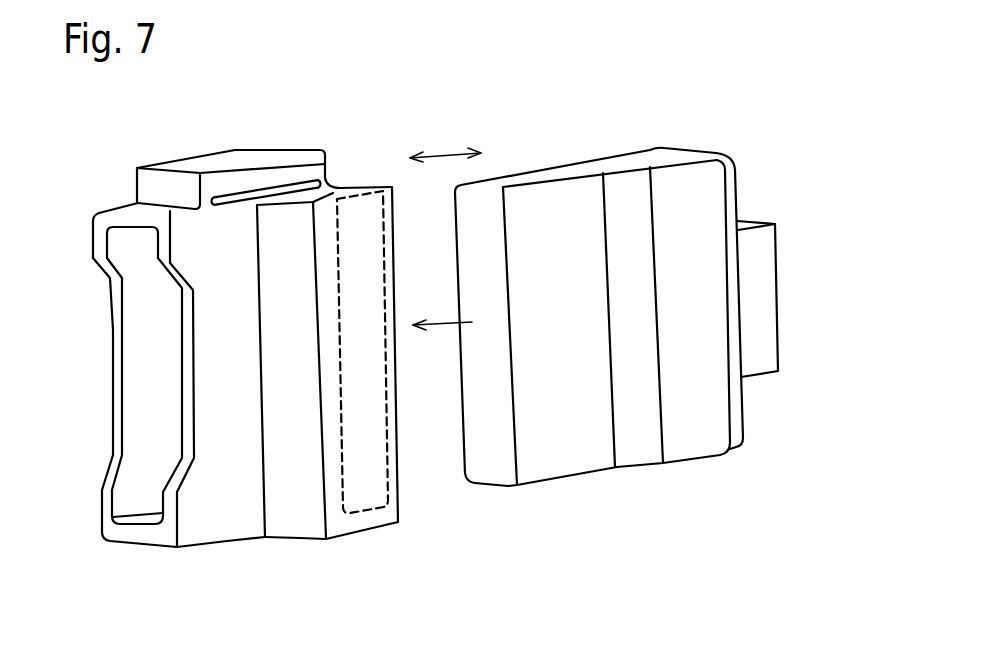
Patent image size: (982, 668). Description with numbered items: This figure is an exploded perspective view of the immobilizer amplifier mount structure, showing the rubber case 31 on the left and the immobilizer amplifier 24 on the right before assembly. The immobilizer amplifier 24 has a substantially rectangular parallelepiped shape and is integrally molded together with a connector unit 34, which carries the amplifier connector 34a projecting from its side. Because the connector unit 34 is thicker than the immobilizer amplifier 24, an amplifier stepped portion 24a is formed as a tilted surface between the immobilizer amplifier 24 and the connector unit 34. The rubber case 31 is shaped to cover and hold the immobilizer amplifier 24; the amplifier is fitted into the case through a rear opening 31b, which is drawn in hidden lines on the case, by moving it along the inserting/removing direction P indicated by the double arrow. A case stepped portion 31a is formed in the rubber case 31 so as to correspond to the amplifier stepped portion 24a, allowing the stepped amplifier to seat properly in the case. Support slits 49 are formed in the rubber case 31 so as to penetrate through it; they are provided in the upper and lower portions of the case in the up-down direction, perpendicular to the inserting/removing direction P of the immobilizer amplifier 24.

The immobilizer amplifier 24 is at (656, 313).
The amplifier stepped portion 24a is at (641, 437).
The rubber case 31 is at (290, 365).
The case stepped portion 31a is at (372, 404).
The rear opening 31b is at (397, 463).
The connector unit 34 is at (753, 271).
The amplifier connector 34a is at (758, 268).
The support slit 49 is at (280, 189).
The inserting/removing direction P is at (449, 153).